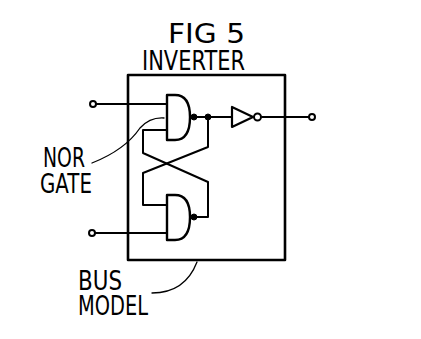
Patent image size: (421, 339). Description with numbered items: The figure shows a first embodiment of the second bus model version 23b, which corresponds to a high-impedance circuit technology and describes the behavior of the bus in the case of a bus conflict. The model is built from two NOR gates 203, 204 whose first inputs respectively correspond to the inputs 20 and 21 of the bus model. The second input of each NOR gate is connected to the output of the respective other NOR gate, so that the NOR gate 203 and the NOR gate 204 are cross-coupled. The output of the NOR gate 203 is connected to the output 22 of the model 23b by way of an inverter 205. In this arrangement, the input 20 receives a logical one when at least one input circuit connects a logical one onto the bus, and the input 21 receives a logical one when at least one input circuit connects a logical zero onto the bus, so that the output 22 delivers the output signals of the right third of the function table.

The input 20 is at (115, 104).
The input 21 is at (115, 235).
The output 22 is at (302, 117).
The second bus model version 23b is at (278, 212).
The NOR gate 203 is at (199, 108).
The NOR gate 204 is at (194, 224).
The inverter 205 is at (257, 70).